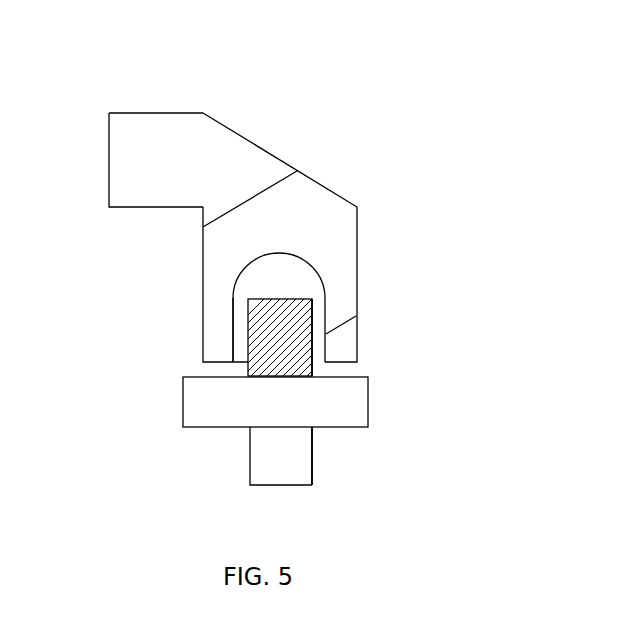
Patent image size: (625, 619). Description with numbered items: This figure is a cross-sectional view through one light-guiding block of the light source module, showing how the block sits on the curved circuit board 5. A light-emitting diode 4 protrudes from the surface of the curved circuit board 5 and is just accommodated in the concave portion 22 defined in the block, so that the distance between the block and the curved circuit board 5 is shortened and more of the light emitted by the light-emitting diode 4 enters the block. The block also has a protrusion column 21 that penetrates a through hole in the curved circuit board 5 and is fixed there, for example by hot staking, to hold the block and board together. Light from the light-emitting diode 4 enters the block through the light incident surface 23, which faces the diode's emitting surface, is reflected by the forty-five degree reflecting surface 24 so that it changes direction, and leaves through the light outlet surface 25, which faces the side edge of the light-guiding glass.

The light-emitting diode 4 is at (297, 362).
The curved circuit board 5 is at (360, 388).
The protrusion column 21 is at (258, 477).
The concave portion 22 is at (242, 327).
The light incident surface 23 is at (305, 255).
The reflecting surface 24 is at (248, 137).
The light outlet surface 25 is at (107, 133).